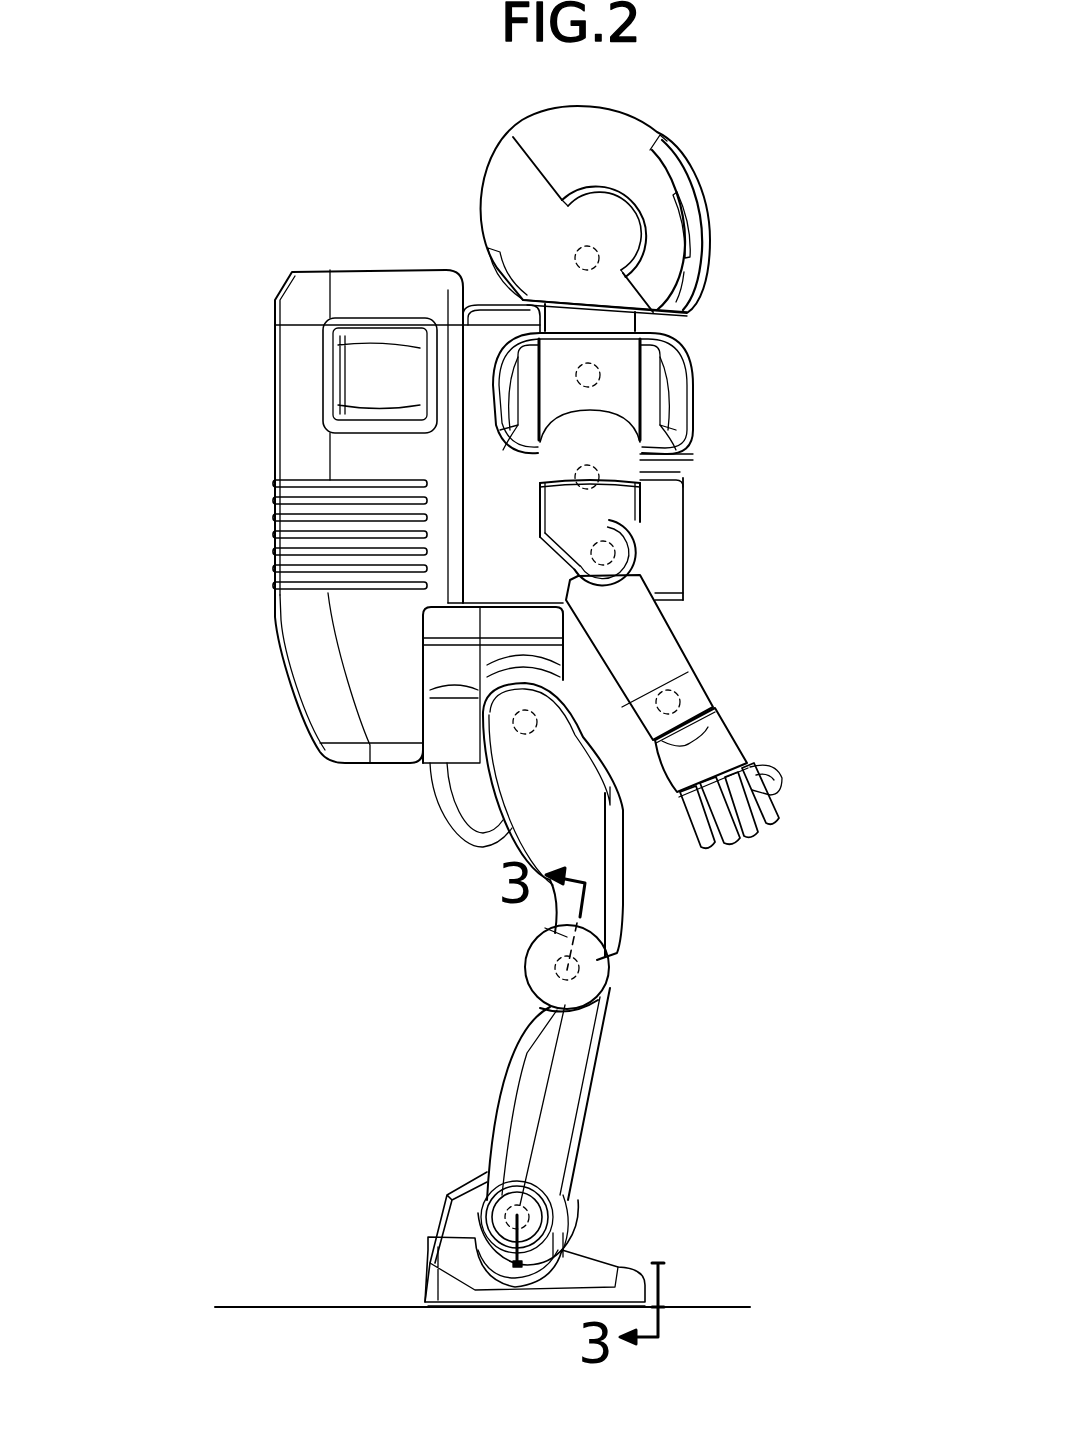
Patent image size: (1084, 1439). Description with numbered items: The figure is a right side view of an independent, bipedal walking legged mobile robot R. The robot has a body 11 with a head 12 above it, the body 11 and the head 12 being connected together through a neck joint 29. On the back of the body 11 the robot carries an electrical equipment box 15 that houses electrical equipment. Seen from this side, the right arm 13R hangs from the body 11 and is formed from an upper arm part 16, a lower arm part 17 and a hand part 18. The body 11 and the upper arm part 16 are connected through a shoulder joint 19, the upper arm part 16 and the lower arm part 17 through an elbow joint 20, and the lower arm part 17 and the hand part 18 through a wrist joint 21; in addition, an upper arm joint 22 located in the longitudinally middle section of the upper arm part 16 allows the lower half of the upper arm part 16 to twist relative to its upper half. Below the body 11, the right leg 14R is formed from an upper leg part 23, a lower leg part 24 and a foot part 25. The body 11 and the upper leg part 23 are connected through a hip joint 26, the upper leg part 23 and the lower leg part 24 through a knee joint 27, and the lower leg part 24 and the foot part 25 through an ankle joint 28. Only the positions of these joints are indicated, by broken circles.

The legged mobile robot R is at (745, 246).
The body 11 is at (680, 522).
The head 12 is at (538, 133).
The right arm 13R is at (671, 613).
The right leg 14R is at (625, 928).
The electrical equipment box 15 is at (276, 412).
The upper arm part 16 is at (625, 470).
The lower arm part 17 is at (680, 650).
The hand part 18 is at (732, 735).
The shoulder joint 19 is at (600, 376).
The elbow joint 20 is at (592, 552).
The wrist joint 21 is at (660, 690).
The upper arm joint 22 is at (576, 481).
The upper leg part 23 is at (595, 838).
The lower leg part 24 is at (560, 1100).
The foot part 25 is at (588, 1260).
The hip joint 26 is at (531, 732).
The knee joint 27 is at (553, 969).
The ankle joint 28 is at (465, 1170).
The neck joint 29 is at (582, 250).